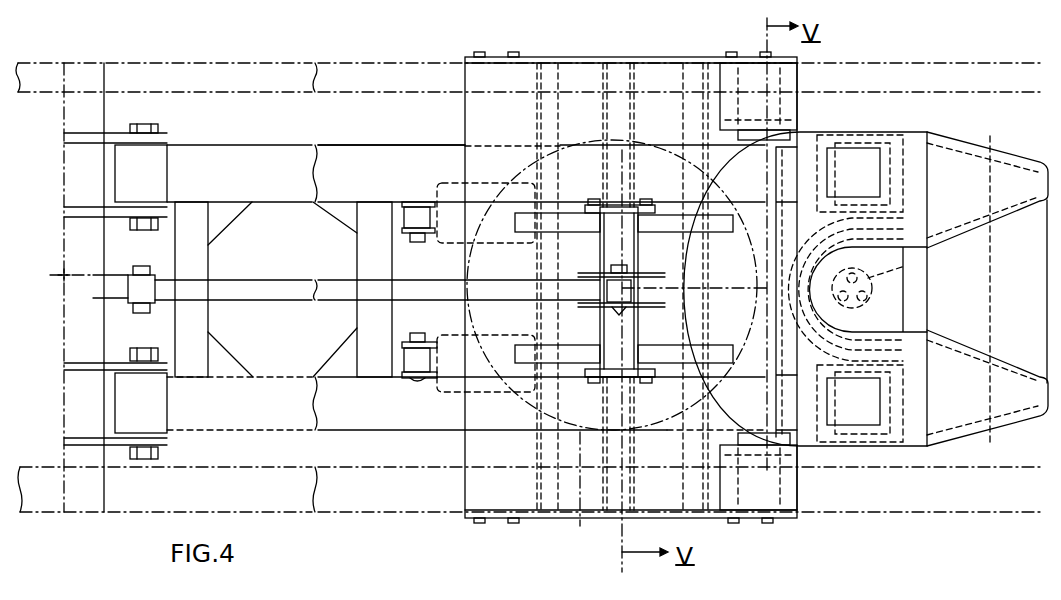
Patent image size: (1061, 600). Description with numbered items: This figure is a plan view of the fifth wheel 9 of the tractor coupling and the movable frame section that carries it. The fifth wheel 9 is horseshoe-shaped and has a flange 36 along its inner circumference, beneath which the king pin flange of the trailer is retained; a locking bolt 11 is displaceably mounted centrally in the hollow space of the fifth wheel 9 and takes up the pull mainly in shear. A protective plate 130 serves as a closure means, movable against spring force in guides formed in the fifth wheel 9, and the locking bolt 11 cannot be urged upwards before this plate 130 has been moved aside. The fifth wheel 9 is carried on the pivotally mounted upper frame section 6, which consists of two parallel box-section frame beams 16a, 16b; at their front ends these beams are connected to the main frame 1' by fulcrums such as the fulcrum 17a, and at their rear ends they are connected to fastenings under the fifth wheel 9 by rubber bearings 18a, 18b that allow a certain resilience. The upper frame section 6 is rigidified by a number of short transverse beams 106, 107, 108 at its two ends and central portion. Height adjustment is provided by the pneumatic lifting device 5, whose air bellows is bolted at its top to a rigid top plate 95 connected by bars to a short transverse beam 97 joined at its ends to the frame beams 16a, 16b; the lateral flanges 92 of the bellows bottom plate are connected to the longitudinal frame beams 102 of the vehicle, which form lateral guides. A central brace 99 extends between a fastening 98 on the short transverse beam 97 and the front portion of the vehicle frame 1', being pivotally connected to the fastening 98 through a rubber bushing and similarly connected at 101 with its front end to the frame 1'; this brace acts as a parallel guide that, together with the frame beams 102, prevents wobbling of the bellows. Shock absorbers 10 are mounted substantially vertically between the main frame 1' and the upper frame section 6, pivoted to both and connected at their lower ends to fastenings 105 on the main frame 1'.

The longitudinal frame beams 102 is at (268, 68).
The lateral flanges 92 is at (606, 60).
The rubber bearing 18a is at (853, 165).
The rubber bearing 18b is at (843, 415).
The fifth wheel 9 is at (970, 160).
The frame beam 16a is at (260, 165).
The frame beam 16b is at (232, 428).
The fulcrum 17a is at (166, 164).
The upper frame section 6 is at (434, 148).
The shock absorbers 10 is at (411, 204).
The transverse short beam 107 is at (367, 234).
The transverse short beam 106 is at (205, 277).
The main frame 1' is at (50, 281).
The front connection of central brace 101 is at (129, 302).
The central brace 99 is at (302, 298).
The fastenings 105 is at (433, 334).
The fastening 98 is at (578, 295).
The short transverse beam 97 is at (623, 260).
The locking bolt 11 is at (905, 266).
The protective plate 130 is at (880, 287).
The transverse short beam 108 is at (806, 316).
The flange 36 is at (928, 332).
The lifting device 5 is at (512, 399).
The top plate 95 is at (584, 494).